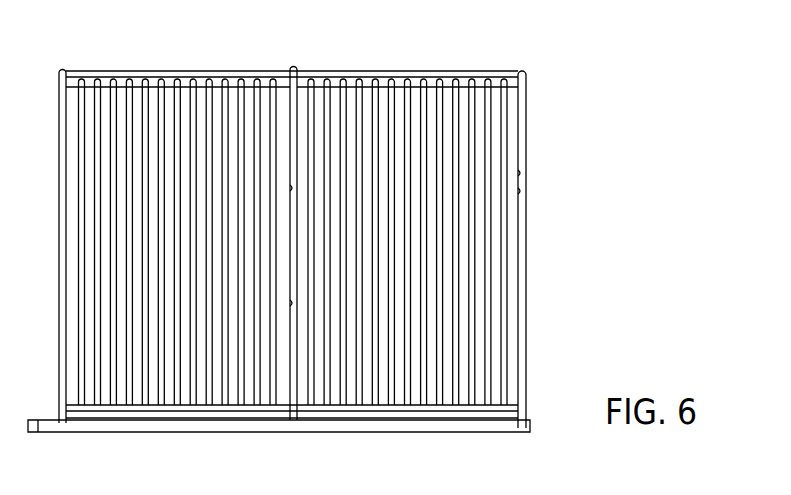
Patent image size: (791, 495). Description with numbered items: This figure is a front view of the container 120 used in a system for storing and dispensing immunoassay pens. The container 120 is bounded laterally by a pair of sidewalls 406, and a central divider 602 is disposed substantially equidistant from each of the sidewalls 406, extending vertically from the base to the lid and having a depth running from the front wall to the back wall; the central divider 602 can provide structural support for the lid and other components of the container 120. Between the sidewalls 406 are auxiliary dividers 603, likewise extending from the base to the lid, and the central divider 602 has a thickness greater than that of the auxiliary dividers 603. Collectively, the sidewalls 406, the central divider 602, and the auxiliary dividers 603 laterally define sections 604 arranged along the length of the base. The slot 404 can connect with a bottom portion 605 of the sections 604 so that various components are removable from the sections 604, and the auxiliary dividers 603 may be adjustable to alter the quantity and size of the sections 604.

The container 120 is at (314, 240).
The slot 404 is at (450, 420).
The sidewalls 406 is at (65, 72).
The central divider 602 is at (294, 72).
The auxiliary dividers 603 is at (378, 88).
The sections 604 is at (175, 90).
The bottom portion 605 is at (447, 405).